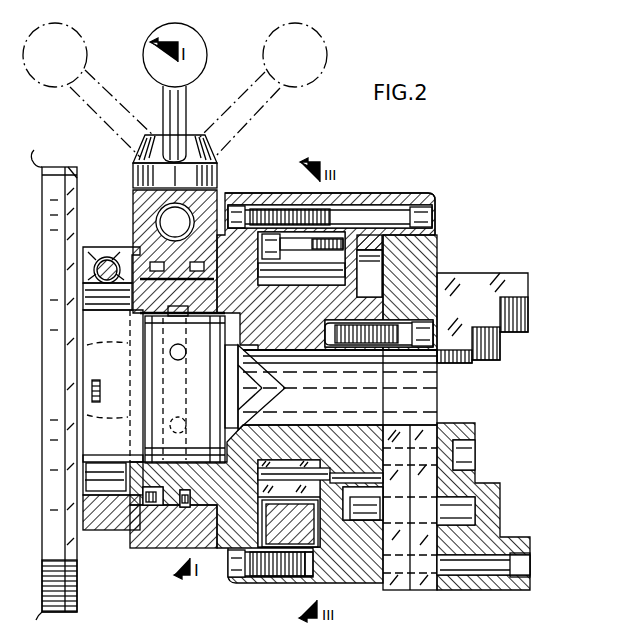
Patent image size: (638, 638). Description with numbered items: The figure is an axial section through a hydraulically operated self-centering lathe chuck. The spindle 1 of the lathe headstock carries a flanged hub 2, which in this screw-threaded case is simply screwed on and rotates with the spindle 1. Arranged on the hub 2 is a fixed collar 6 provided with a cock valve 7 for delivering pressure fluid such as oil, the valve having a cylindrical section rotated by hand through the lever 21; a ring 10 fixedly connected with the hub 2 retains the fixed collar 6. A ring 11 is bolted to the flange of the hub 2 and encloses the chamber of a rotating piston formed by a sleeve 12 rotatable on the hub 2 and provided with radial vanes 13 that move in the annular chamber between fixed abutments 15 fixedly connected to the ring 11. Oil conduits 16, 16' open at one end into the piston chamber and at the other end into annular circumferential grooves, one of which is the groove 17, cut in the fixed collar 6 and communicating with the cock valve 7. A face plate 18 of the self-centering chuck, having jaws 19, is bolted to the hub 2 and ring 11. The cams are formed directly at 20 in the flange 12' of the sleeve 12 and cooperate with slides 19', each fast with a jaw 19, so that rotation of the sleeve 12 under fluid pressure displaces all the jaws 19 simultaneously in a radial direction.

The spindle 1 is at (196, 397).
The flanged hub 2 is at (268, 440).
The fixed collar 6 is at (136, 233).
The cock valve 7 is at (204, 172).
The ring 10 is at (101, 522).
The ring 11 is at (333, 197).
The sleeve 12 is at (365, 360).
The flange 12' is at (381, 207).
The radial vanes 13 is at (277, 532).
The fixed abutments 15 is at (284, 215).
The oil conduit 16 is at (179, 324).
The oil conduit 16' is at (317, 473).
The annular circumferential groove 17 is at (186, 515).
The face plate 18 is at (418, 250).
The jaws 19 is at (487, 415).
The slides 19' is at (405, 507).
The cams 20 is at (369, 273).
The lever 21 is at (198, 64).